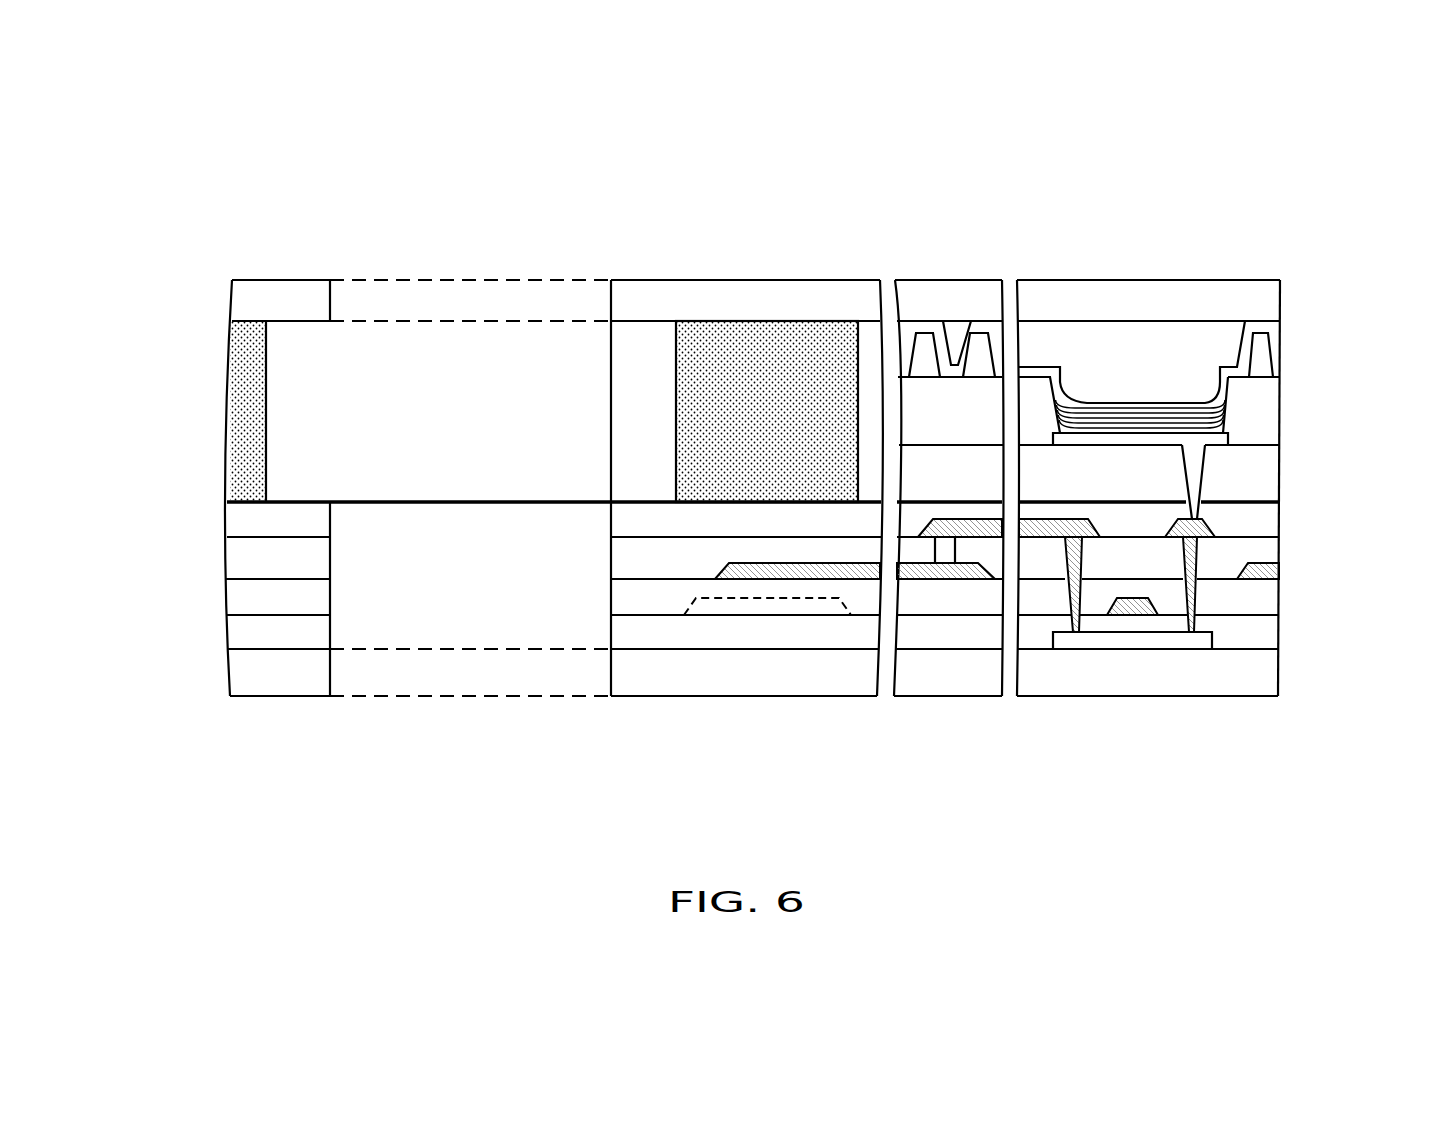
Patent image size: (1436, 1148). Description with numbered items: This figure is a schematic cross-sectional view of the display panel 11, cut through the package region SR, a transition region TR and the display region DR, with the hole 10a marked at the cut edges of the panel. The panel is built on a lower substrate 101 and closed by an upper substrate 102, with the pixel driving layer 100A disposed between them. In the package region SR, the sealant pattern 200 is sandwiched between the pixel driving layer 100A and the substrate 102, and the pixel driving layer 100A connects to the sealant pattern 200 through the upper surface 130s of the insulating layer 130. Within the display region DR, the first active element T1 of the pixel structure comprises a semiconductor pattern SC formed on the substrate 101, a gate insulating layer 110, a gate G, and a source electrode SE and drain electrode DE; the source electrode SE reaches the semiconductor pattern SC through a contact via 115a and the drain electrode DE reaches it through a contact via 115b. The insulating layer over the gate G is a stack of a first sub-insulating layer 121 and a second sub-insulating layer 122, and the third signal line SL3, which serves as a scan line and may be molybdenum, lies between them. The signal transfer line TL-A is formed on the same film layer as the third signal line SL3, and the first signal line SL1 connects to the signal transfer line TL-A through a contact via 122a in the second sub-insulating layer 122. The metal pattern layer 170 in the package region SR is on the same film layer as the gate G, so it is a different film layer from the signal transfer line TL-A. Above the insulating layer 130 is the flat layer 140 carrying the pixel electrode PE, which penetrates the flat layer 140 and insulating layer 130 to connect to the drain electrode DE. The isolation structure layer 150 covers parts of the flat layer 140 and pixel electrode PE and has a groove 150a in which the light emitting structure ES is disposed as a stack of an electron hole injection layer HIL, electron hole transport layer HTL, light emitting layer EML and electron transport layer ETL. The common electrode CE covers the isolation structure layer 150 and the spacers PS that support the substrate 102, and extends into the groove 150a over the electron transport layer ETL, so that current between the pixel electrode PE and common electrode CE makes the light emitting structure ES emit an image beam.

The sealant pattern 200 is at (247, 400).
The metal pattern layer 170 is at (758, 611).
The package region SR is at (316, 128).
The transition region TR is at (988, 128).
The display region DR is at (1266, 128).
The hole 10a is at (611, 521).
The upper surface of insulating layer 130s is at (650, 489).
The pixel driving layer 100A is at (226, 503).
The signal transfer line TL-A is at (815, 572).
The first signal line SL1 is at (977, 528).
The contact via 122a is at (940, 556).
The contact via 115a is at (1069, 564).
The contact via 115b is at (1196, 564).
The source electrode SE is at (1077, 627).
The semiconductor pattern SC is at (1110, 642).
The gate G is at (1143, 607).
The drain electrode DE is at (1193, 625).
The first active element T1 is at (1222, 763).
The spacer PS is at (975, 350).
The common electrode CE is at (1040, 366).
The groove 150a is at (1066, 394).
The light emitting structure ES is at (1289, 201).
The electron hole injection layer HIL is at (1094, 427).
The electron hole transport layer HTL is at (1105, 422).
The light emitting layer EML is at (1158, 414).
The electron transport layer ETL is at (1195, 405).
The substrate 102 is at (1257, 302).
The isolation structure layer 150 is at (1258, 402).
The pixel electrode PE is at (1213, 442).
The flat layer 140 is at (1258, 485).
The insulating layer 130 is at (1260, 522).
The second sub-insulating layer 122 is at (1260, 552).
The third signal line SL3 is at (1265, 570).
The first sub-insulating layer 121 is at (1260, 598).
The gate insulating layer 110 is at (1260, 635).
The substrate 101 is at (1260, 682).
The display panel 11 is at (1380, 858).